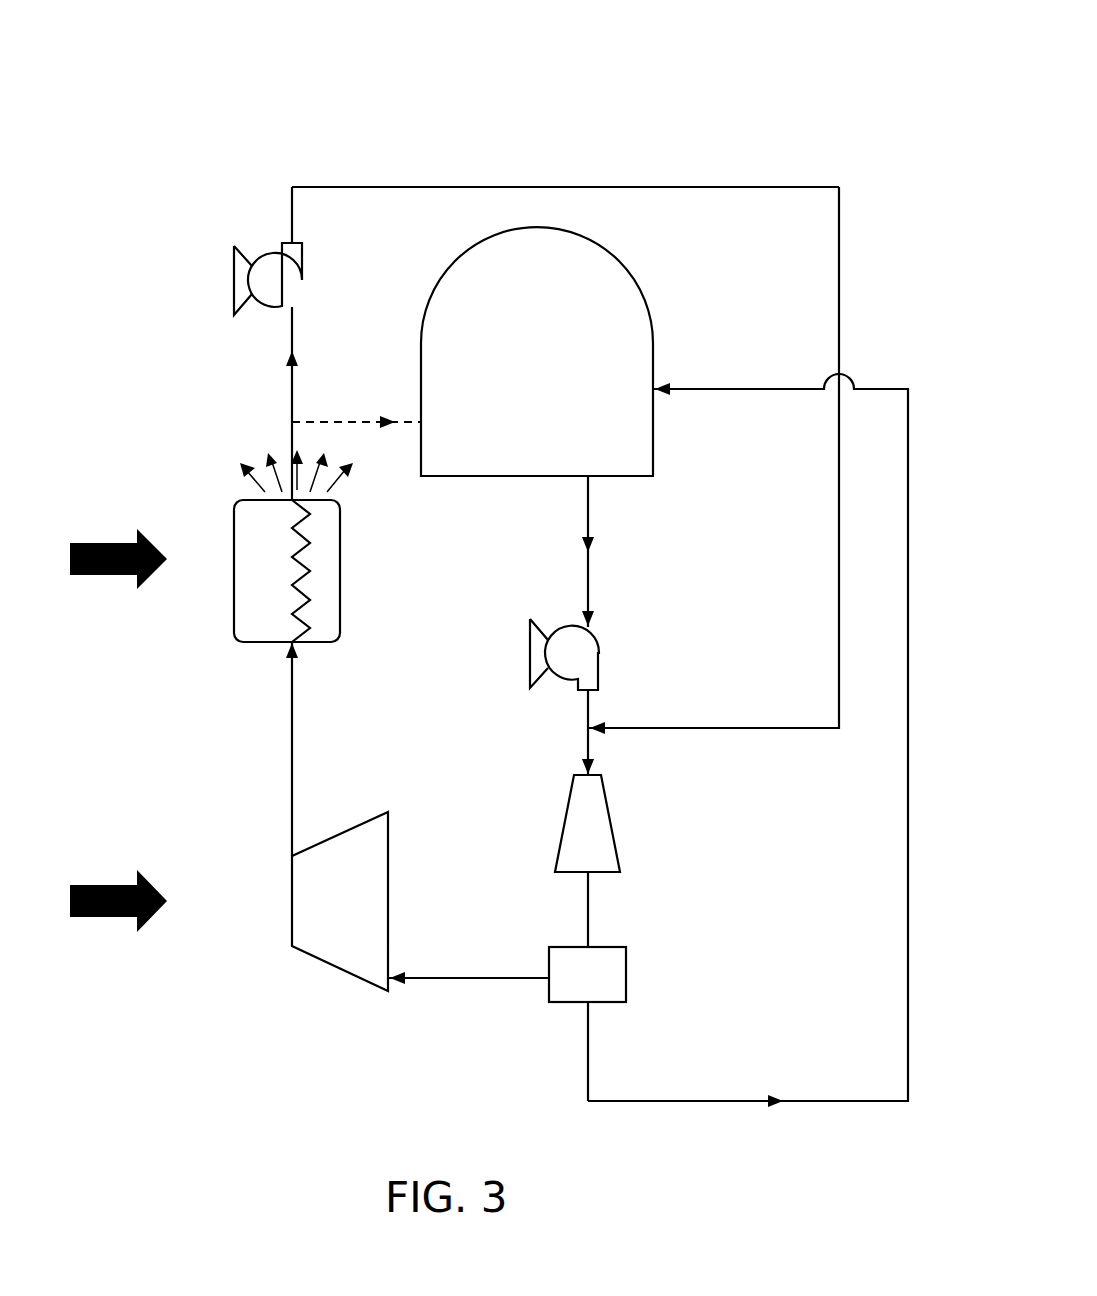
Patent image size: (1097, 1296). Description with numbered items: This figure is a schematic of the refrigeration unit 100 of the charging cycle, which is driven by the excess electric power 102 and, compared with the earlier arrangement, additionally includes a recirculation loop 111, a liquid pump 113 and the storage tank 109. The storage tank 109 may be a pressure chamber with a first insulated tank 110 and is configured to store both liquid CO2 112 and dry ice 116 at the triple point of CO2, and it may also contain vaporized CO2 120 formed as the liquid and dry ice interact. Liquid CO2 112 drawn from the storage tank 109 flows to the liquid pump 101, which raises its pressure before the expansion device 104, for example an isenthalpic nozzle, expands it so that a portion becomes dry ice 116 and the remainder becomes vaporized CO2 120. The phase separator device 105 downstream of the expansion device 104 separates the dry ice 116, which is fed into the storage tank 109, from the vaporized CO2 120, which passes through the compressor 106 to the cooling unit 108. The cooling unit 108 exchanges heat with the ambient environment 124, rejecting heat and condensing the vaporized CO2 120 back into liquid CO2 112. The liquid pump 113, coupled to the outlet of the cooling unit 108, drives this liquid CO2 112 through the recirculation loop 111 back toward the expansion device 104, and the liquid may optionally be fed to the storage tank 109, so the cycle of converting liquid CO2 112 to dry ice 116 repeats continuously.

The refrigeration unit 100 is at (715, 56).
The liquid pump 101 is at (529, 664).
The excess electric power 102 is at (103, 577).
The expansion device 104 is at (619, 840).
The phase separator device 105 is at (627, 976).
The compressor 106 is at (327, 966).
The cooling unit 108 is at (233, 520).
The storage tank 109 is at (682, 288).
The first insulated tank 110 is at (628, 268).
The recirculation loop 111 is at (375, 186).
The liquid carbon dioxide 112 is at (290, 358).
The liquid pump 113 is at (233, 280).
The dry ice 116 is at (660, 386).
The vaporized carbon dioxide 120 is at (288, 652).
The ambient environment 124 is at (250, 456).